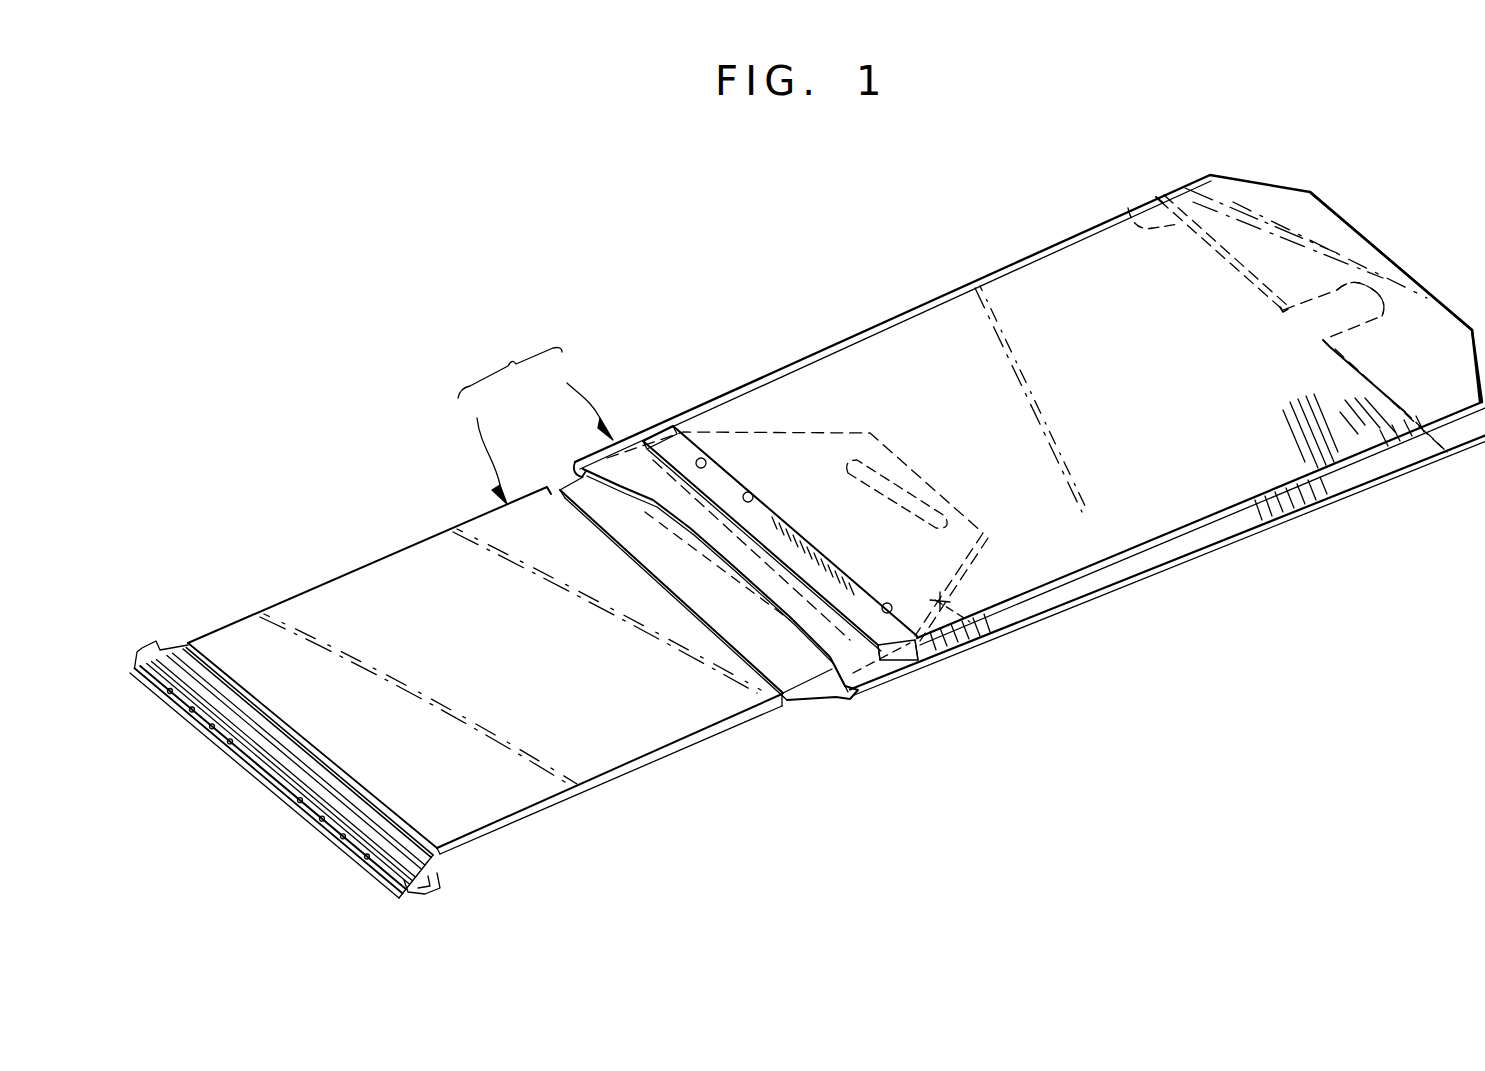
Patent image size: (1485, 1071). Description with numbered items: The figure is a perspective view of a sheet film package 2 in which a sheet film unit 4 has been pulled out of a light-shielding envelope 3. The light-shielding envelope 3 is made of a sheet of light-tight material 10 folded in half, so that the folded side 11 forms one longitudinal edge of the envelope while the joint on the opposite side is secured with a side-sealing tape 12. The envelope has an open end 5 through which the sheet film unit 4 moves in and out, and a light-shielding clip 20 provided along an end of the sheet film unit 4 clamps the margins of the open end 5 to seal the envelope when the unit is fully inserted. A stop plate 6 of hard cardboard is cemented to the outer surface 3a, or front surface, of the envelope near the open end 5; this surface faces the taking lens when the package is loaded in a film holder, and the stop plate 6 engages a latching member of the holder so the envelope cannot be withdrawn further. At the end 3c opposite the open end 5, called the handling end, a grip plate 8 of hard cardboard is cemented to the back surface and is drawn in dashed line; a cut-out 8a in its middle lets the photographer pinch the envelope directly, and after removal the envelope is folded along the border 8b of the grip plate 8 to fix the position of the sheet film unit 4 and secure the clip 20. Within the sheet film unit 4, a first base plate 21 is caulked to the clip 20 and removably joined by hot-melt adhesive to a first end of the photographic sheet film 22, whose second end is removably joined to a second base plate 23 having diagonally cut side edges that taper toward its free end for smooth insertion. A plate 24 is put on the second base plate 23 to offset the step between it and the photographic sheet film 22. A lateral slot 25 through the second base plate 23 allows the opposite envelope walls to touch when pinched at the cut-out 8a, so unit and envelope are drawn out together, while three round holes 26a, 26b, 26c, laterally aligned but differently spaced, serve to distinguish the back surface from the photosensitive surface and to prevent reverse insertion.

The sheet film package 2 is at (510, 360).
The light-shielding envelope 3 is at (581, 398).
The outer surface (front surface) 3a is at (1028, 296).
The end opposite the open end (handling end) 3c is at (1397, 264).
The sheet film unit 4 is at (485, 447).
The open end 5 is at (655, 508).
The stop plate 6 is at (893, 636).
The grip plate 8 is at (1451, 456).
The cut-out 8a is at (1313, 307).
The border of the grip plate 8b is at (1128, 208).
The sheet of light-tight material 10 is at (1367, 428).
The folded side 11 is at (831, 346).
The side-sealing tape 12 is at (1262, 524).
The light-shielding clip 20 is at (367, 834).
The first base plate 21 is at (430, 862).
The photographic sheet film 22 is at (652, 749).
The second base plate 23 is at (990, 645).
The plate 24 is at (810, 699).
The lateral slot 25 is at (940, 505).
The round hole 26a is at (706, 458).
The round hole 26b is at (752, 493).
The round hole 26c is at (886, 603).